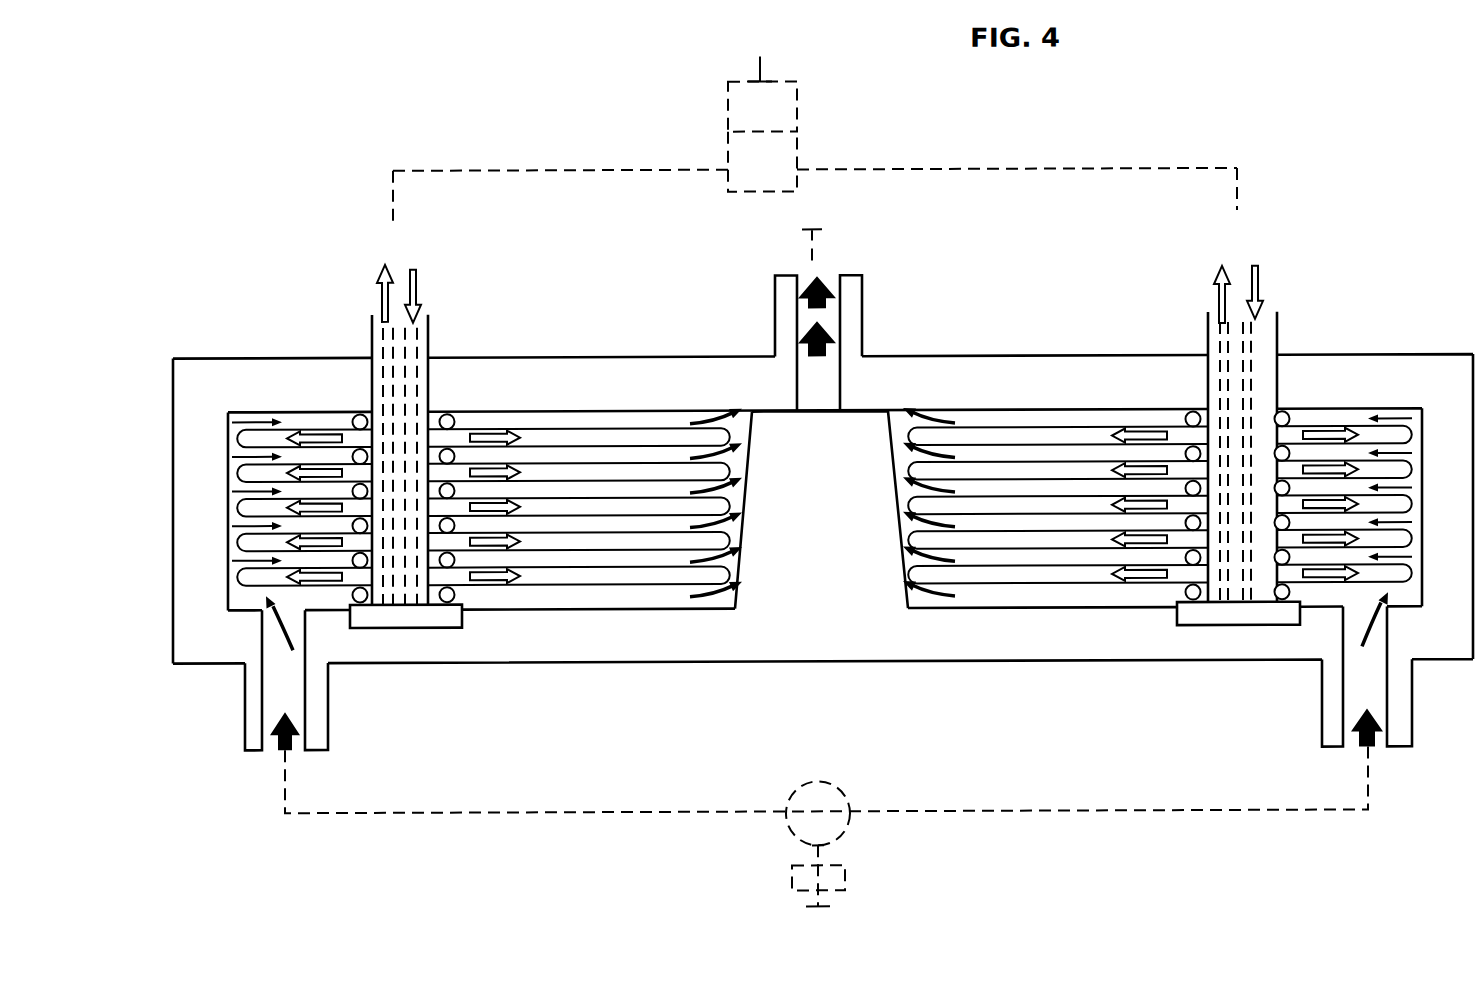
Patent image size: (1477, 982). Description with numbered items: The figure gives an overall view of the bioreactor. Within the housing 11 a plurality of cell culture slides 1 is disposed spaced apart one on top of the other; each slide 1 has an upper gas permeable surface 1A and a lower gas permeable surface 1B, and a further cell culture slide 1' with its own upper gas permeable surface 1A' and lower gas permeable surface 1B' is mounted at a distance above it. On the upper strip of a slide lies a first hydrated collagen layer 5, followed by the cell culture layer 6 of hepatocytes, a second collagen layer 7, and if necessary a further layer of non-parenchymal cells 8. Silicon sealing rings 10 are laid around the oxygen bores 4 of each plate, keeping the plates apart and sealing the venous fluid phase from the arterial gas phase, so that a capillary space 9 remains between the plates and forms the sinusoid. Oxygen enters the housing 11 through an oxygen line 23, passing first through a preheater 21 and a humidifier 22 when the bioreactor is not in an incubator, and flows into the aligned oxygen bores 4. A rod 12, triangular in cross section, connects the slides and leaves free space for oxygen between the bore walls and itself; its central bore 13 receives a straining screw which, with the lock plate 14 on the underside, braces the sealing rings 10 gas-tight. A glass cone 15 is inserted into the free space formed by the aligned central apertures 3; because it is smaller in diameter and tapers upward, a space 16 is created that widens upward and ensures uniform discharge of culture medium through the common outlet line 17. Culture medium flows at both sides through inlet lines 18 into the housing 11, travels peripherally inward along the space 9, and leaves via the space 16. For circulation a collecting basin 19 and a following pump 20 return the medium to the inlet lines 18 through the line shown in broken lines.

The cell culture slide 1 is at (258, 592).
The further cell culture slide 1' is at (256, 542).
The upper gas permeable surface 1A is at (574, 607).
The lower gas permeable surface 1B is at (579, 607).
The upper gas permeable surface 1A' is at (623, 502).
The lower gas permeable surface 1B' is at (624, 533).
The central aperture 3 is at (873, 414).
The bores 4 is at (423, 413).
The first hydrated collagen layer 5 is at (660, 562).
The cell culture layer 6 is at (1087, 561).
The second collagen layer 7 is at (1344, 498).
The layer of non-parenchymal cells 8 is at (302, 491).
The capillary space 9 is at (822, 502).
The silicon sealing rings 10 is at (490, 680).
The housing 11 is at (423, 663).
The rod 12 is at (371, 350).
The central bore 13 is at (398, 358).
The lock plate 14 is at (373, 622).
The glass cone 15 is at (872, 600).
The space 16 is at (772, 414).
The common outlet line 17 is at (828, 327).
The inlet lines 18 is at (288, 685).
The collecting basin 19 is at (837, 877).
The pump 20 is at (798, 824).
The preheater 21 is at (779, 111).
The humidifier 22 is at (777, 159).
The oxygen line 23 is at (371, 320).